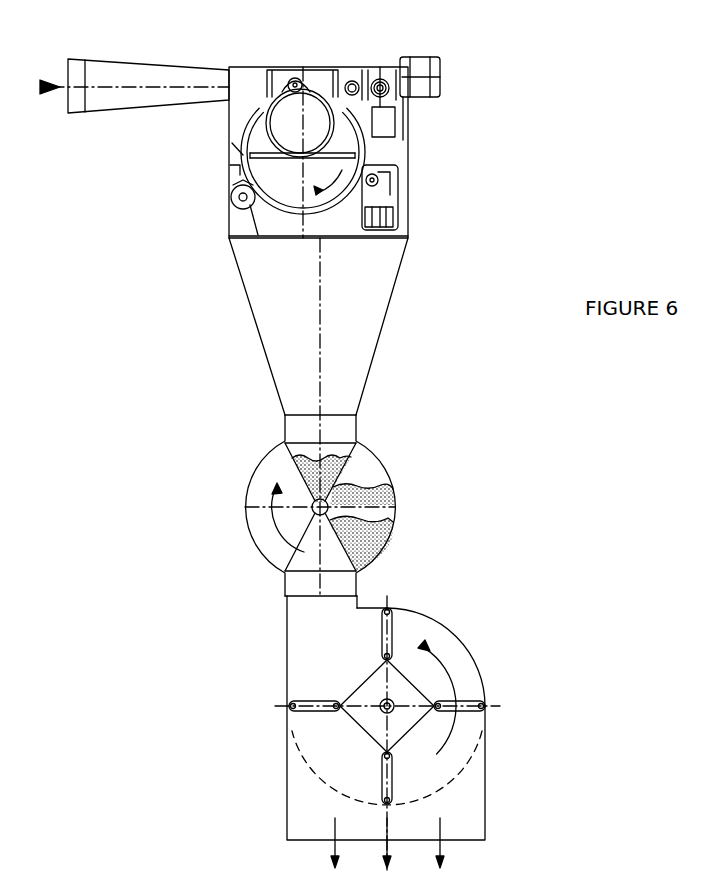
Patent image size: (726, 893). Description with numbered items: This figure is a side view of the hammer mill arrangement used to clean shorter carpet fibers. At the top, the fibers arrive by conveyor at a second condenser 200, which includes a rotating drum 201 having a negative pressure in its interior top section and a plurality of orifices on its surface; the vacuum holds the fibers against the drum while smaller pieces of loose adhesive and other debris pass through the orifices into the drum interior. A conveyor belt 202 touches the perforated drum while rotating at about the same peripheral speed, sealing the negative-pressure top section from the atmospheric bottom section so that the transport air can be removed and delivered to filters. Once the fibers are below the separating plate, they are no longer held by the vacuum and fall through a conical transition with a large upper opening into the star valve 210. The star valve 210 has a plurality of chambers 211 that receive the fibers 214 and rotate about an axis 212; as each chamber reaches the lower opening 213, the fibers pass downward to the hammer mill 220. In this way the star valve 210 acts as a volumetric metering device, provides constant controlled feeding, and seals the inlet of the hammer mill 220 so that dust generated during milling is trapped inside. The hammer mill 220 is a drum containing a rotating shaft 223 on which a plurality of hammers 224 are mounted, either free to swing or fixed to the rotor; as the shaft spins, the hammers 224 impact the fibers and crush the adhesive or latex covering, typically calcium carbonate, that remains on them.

The second condenser 200 is at (243, 58).
The rotating drum 201 is at (227, 193).
The conveyor belt 202 is at (408, 146).
The star valve 210 is at (388, 463).
The chambers 211 is at (258, 472).
The axis 212 is at (313, 512).
The lower opening 213 is at (360, 582).
The fibers 214 is at (395, 540).
The hammer mill 220 is at (485, 650).
The rotating shaft 223 is at (385, 709).
The hammers 224 is at (380, 642).